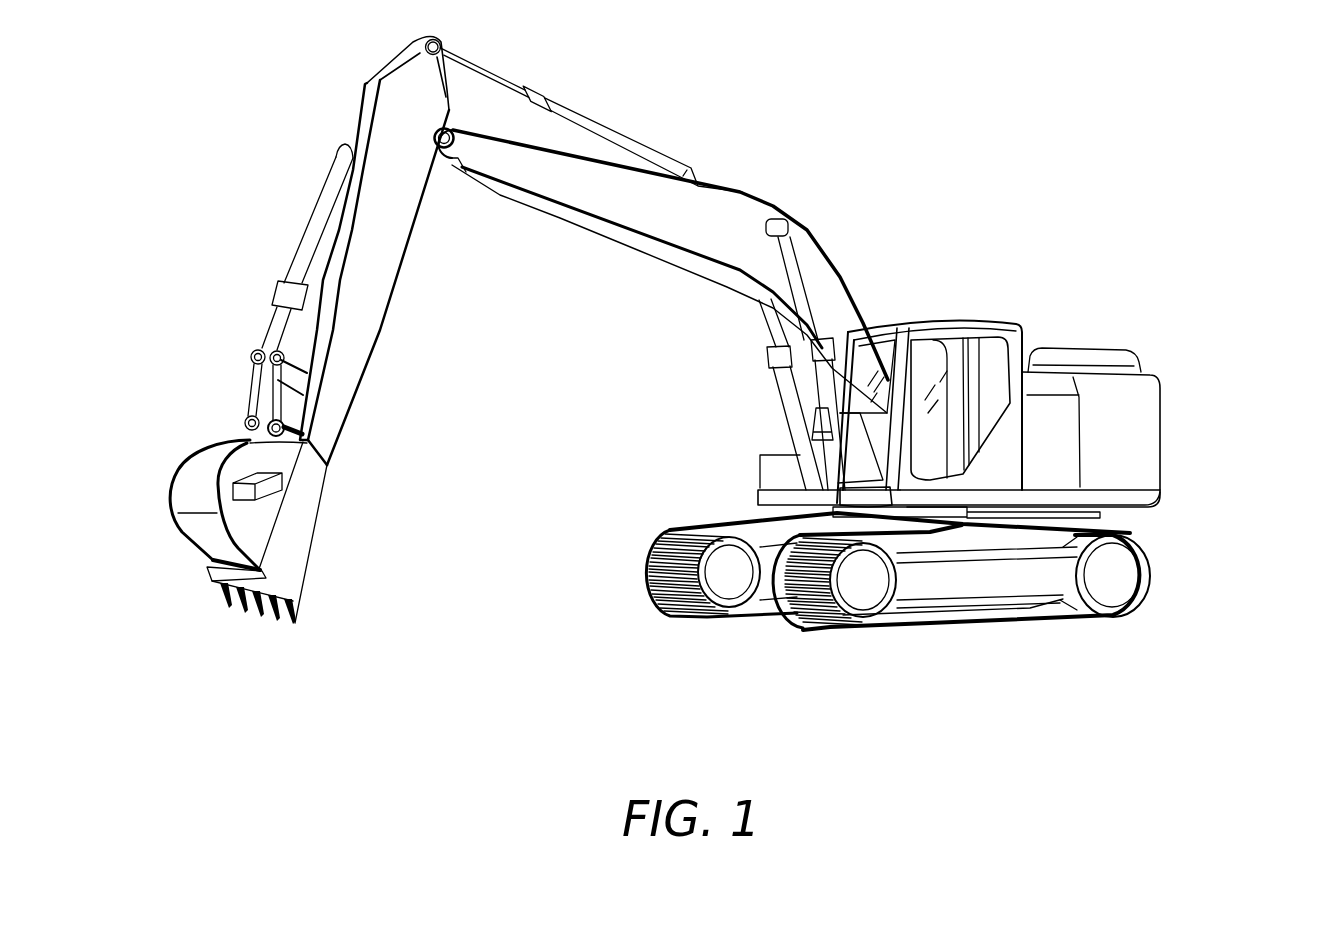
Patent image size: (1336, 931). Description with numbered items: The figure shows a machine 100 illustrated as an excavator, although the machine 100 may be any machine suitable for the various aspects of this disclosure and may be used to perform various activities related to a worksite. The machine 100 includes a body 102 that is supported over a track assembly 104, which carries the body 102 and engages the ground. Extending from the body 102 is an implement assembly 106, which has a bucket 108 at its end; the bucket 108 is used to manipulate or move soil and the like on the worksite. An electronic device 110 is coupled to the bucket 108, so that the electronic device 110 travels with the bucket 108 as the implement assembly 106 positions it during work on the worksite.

The machine 100 is at (1214, 100).
The body 102 is at (1132, 503).
The track assembly 104 is at (606, 607).
The implement assembly 106 is at (237, 241).
The bucket 108 is at (193, 486).
The electronic device 110 is at (284, 487).